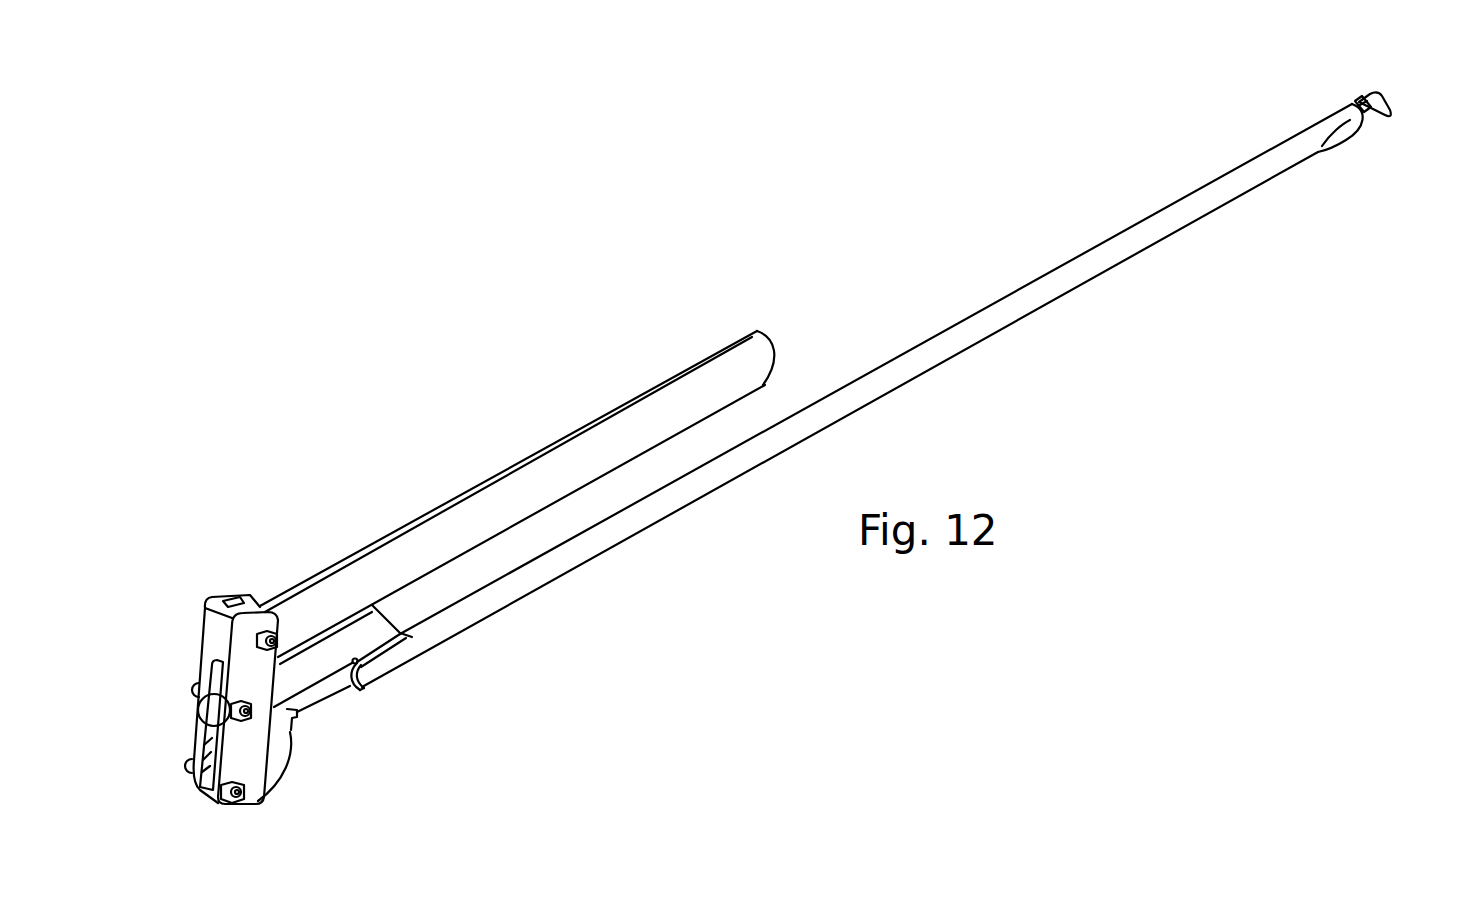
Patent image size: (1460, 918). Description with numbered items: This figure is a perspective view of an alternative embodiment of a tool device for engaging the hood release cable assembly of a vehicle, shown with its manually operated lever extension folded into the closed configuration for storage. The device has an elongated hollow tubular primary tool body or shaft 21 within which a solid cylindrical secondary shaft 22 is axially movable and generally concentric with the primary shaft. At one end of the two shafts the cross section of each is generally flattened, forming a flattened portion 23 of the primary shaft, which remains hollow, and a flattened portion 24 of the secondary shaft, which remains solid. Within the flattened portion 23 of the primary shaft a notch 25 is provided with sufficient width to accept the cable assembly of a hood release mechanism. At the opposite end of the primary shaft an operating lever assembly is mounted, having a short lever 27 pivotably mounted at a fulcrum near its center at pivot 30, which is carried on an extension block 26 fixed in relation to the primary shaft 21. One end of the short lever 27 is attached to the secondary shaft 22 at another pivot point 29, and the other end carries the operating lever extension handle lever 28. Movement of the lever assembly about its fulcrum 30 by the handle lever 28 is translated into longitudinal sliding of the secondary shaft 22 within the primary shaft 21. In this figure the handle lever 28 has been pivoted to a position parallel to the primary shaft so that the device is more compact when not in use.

The primary tool body or shaft 21 is at (935, 355).
The secondary shaft 22 is at (338, 688).
The flattened portion of the primary shaft 23 is at (1343, 131).
The flattened portion of the secondary shaft 24 is at (1372, 116).
The notch 25 is at (1353, 103).
The extension block 26 is at (380, 635).
The short lever 27 is at (224, 640).
The handle lever 28 is at (482, 517).
The pivot point 29 is at (241, 801).
The pivot 30 is at (231, 707).